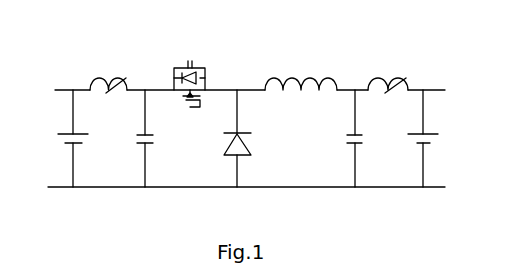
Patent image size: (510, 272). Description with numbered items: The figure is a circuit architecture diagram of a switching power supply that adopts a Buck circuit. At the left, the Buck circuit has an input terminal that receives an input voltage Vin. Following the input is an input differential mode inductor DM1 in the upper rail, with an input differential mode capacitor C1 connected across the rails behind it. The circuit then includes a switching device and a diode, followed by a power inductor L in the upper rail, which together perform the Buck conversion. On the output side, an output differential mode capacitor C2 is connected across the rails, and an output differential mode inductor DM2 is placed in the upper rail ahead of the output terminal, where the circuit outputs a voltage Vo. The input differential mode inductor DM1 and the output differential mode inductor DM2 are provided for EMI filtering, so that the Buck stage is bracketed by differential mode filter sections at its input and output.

The input voltage Vin is at (52, 140).
The input differential mode inductor DM1 is at (115, 69).
The input differential mode capacitor C1 is at (126, 144).
The power inductor L is at (301, 67).
The output differential mode inductor DM2 is at (390, 69).
The output differential mode capacitor C2 is at (371, 144).
The output voltage Vo is at (438, 140).